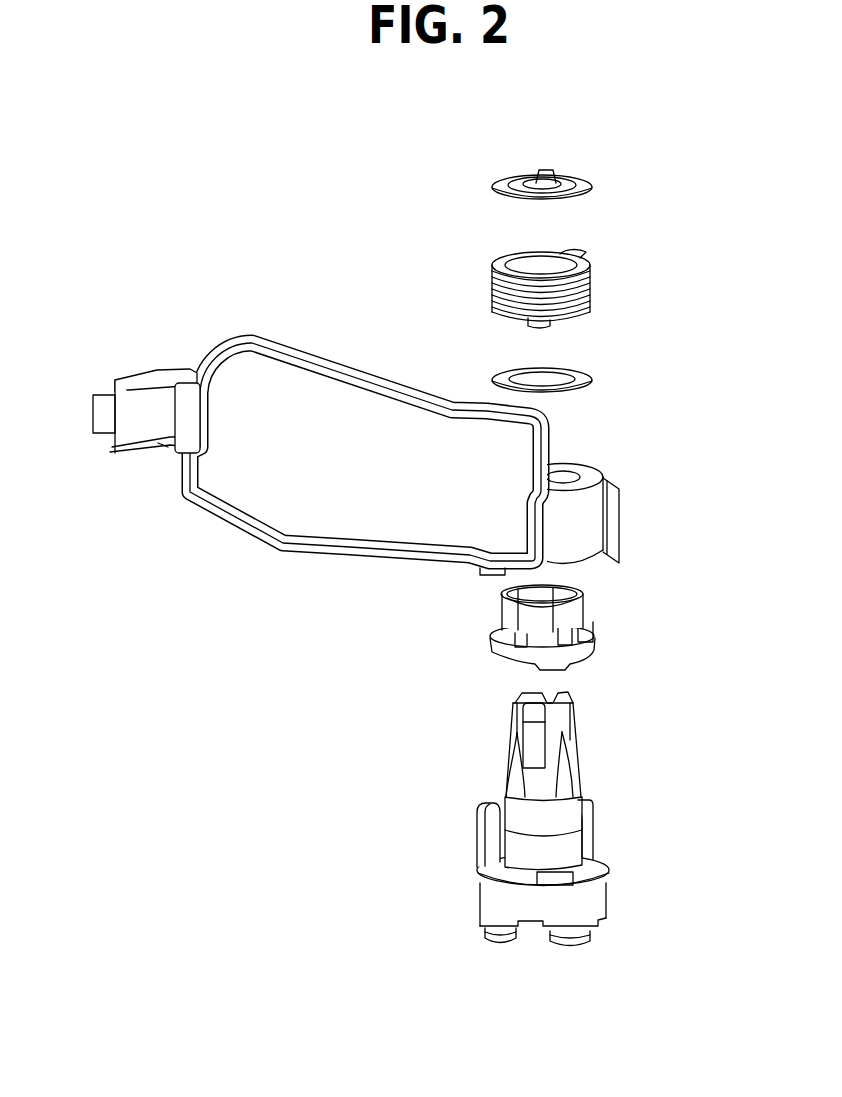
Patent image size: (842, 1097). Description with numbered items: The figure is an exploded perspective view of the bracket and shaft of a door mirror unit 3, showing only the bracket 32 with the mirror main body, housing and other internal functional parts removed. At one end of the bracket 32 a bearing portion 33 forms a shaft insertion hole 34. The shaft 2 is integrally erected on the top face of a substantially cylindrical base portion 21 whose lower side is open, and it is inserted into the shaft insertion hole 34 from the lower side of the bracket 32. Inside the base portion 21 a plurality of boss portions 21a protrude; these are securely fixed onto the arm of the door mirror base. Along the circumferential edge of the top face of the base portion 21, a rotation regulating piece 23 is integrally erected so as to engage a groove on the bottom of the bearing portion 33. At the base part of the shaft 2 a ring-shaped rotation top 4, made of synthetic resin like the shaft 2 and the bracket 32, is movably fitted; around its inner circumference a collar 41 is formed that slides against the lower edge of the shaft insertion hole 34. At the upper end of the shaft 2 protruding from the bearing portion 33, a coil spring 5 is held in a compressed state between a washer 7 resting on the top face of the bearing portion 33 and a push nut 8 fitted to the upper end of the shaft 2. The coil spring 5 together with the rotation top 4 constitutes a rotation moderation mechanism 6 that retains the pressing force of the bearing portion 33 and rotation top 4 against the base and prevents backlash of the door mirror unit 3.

The shaft 2 is at (540, 842).
The door mirror unit 3 is at (394, 483).
The rotation top 4 is at (488, 653).
The coil spring 5 is at (488, 282).
The rotation moderation mechanism 6 is at (484, 470).
The washer 7 is at (492, 378).
The push nut 8 is at (493, 182).
The base portion 21 is at (547, 924).
The boss portions 21a is at (484, 940).
The rotation regulating piece 23 is at (593, 817).
The bracket 32 is at (200, 510).
The bearing portion 33 is at (605, 480).
The shaft insertion hole 34 is at (575, 463).
The collar 41 is at (502, 610).